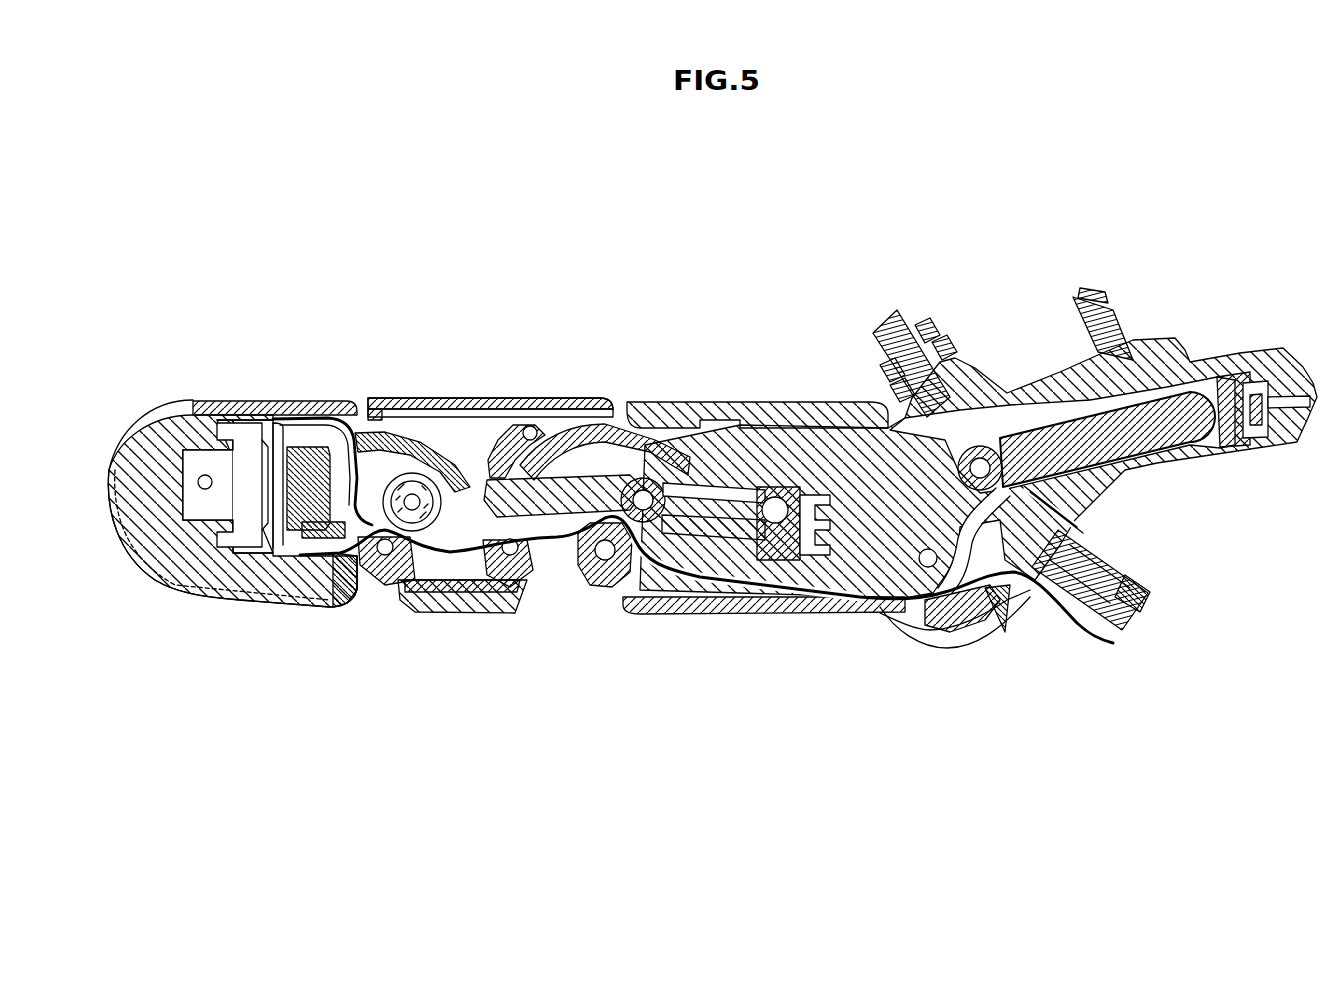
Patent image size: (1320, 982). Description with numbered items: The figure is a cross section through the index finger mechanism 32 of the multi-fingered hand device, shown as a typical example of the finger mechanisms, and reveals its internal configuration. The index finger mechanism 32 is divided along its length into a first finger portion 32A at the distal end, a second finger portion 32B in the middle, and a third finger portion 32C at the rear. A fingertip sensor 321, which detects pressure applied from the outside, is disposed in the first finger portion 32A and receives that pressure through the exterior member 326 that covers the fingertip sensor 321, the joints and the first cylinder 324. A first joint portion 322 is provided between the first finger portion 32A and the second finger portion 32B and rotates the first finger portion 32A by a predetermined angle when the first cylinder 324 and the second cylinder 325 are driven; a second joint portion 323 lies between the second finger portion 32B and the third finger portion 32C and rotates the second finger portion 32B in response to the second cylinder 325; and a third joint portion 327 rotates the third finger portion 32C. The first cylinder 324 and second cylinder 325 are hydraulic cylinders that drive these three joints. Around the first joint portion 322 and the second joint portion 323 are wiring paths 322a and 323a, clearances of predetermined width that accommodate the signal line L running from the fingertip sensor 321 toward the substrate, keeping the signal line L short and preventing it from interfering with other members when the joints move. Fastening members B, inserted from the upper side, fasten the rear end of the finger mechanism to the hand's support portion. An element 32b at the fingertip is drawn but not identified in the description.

The index finger mechanism 32 is at (813, 232).
The first finger portion 32A is at (287, 384).
The second finger portion 32B is at (515, 386).
The third finger portion 32C is at (707, 388).
The distal end portion 32b is at (190, 425).
The fingertip sensor 321 is at (195, 580).
The first joint portion 322 is at (400, 458).
The wiring path 322a is at (418, 555).
The second joint portion 323 is at (598, 600).
The wiring path 323a is at (565, 550).
The first cylinder 324 is at (1145, 453).
The second cylinder 325 is at (719, 540).
The exterior member 326 is at (237, 400).
The third joint portion 327 is at (912, 563).
The fastening members B is at (898, 311).
The signal line L is at (1085, 636).